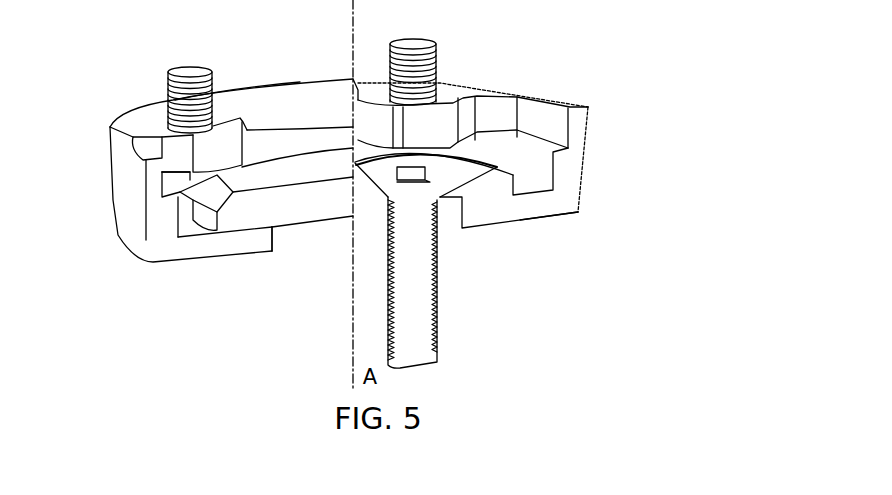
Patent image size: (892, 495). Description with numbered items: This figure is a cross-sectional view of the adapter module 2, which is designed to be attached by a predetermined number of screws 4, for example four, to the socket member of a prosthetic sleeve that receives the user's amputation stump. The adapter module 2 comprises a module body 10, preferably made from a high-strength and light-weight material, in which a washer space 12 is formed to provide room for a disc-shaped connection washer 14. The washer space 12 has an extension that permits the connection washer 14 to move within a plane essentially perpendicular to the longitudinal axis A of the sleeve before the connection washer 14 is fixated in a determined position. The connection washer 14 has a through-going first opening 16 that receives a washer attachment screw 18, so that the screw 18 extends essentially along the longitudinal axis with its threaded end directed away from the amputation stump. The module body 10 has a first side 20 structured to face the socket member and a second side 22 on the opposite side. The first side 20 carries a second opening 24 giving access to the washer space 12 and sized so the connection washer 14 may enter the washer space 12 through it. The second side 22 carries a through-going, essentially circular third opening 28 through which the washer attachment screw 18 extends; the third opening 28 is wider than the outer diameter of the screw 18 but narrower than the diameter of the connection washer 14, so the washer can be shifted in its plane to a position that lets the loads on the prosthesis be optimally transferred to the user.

The adapter module 2 is at (637, 110).
The screws 4 is at (183, 83).
The module body 10 is at (565, 175).
The washer space 12 is at (188, 210).
The connection washer 14 is at (267, 200).
The first opening 16 is at (440, 197).
The washer attachment screw 18 is at (412, 235).
The first side 20 is at (150, 122).
The second side 22 is at (550, 215).
The second opening 24 is at (283, 100).
The third opening 28 is at (327, 232).